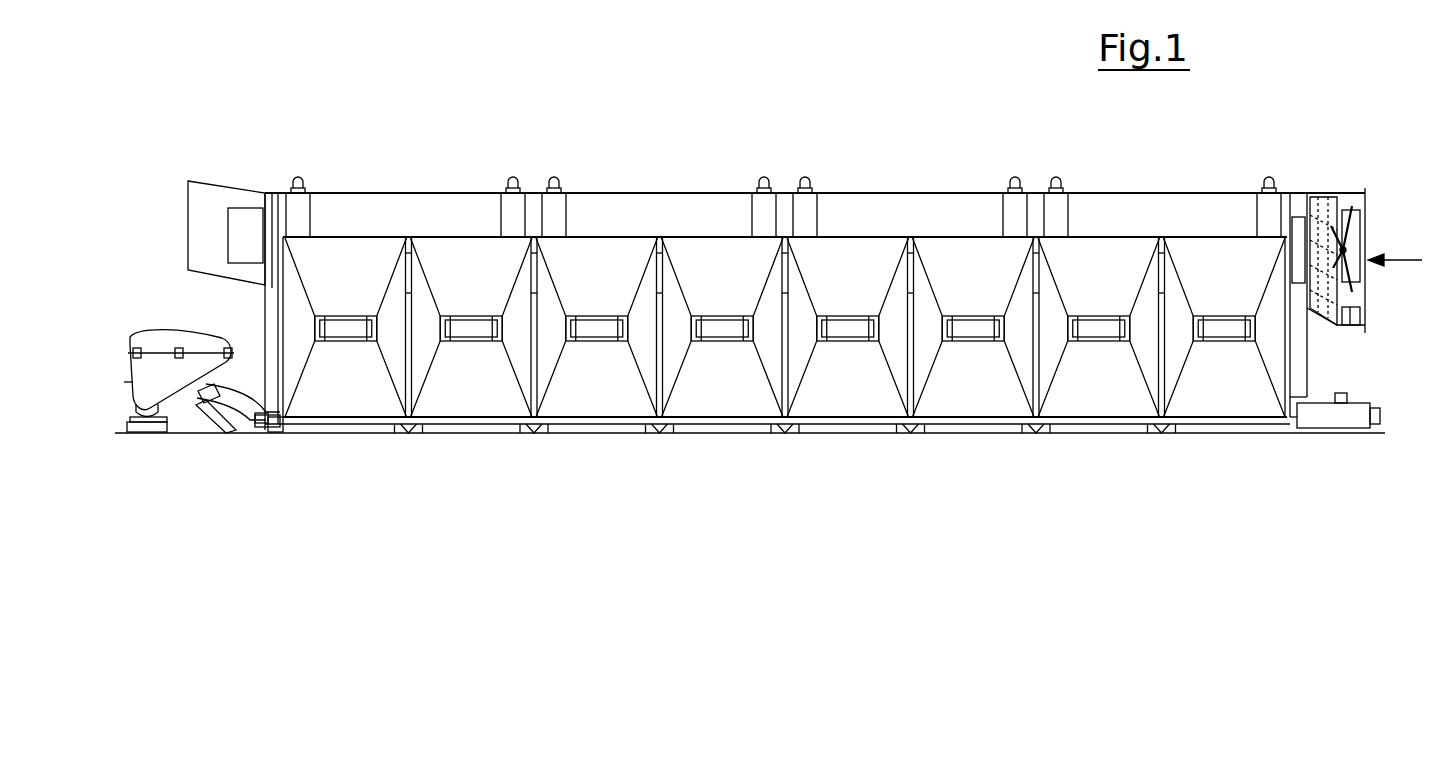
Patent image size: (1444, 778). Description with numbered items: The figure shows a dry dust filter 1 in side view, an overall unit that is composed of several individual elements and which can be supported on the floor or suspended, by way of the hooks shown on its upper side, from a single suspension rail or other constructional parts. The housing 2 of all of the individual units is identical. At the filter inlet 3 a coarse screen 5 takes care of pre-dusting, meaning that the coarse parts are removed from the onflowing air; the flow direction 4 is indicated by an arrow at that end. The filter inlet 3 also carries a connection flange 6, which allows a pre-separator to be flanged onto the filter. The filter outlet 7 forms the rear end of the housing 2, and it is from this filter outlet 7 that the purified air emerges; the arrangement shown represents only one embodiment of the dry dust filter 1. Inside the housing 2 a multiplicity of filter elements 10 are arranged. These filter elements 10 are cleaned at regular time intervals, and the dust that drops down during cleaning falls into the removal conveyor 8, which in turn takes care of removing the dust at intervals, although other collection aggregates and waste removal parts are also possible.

The dry dust filter 1 is at (425, 517).
The housing 2 is at (709, 266).
The filter inlet 3 is at (1365, 215).
The flow direction 4 is at (1405, 258).
The coarse screen 5 is at (1335, 268).
The connection flange 6 is at (1367, 334).
The filter outlet 7 is at (213, 194).
The removal conveyor 8 is at (253, 433).
The filter elements 10 is at (843, 377).